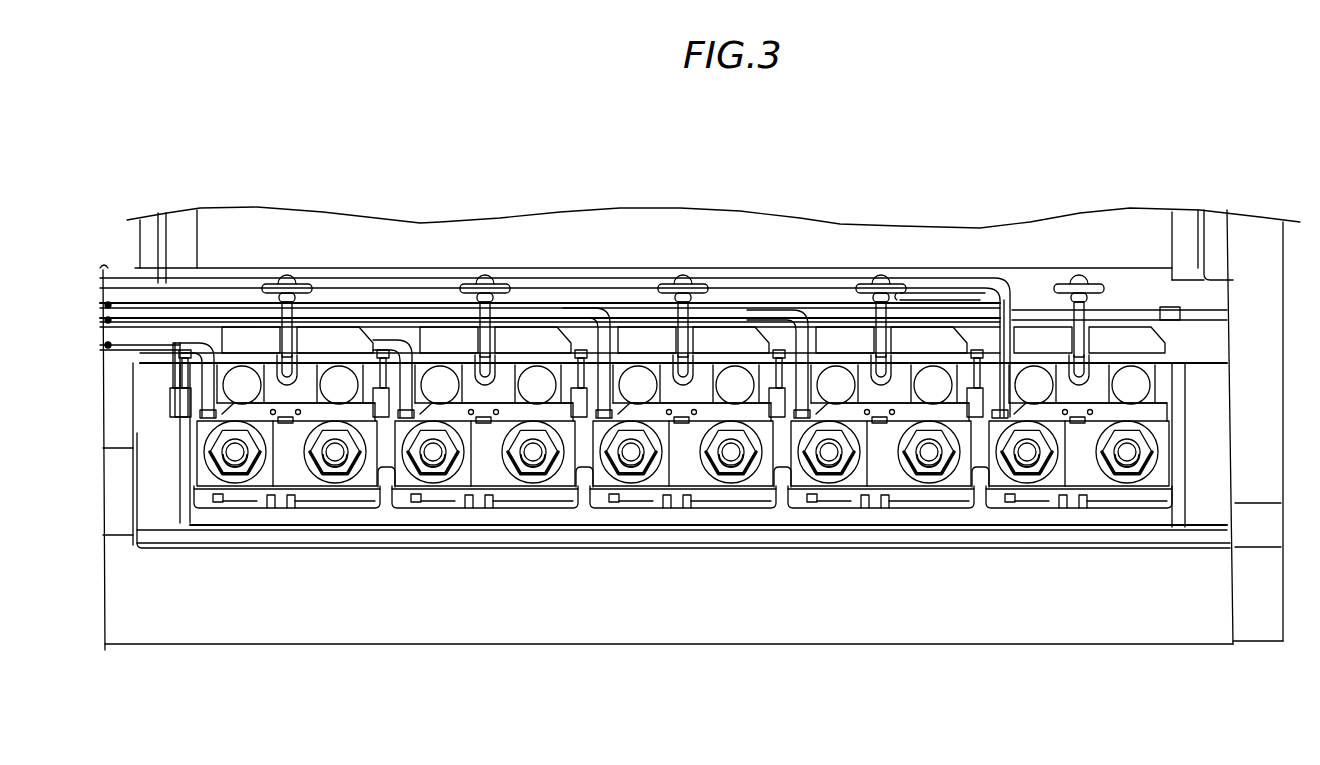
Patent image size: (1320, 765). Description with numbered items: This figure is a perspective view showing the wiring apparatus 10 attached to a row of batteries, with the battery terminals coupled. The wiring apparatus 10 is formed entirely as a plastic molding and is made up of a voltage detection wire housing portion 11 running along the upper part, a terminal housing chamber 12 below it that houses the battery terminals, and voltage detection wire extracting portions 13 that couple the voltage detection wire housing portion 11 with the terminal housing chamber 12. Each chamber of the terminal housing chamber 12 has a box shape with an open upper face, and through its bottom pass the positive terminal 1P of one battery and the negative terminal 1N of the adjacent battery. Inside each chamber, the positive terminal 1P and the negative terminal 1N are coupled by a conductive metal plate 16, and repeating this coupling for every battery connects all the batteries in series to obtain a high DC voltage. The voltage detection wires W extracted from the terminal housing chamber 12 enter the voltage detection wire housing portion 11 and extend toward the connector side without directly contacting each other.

The wiring apparatus 10 is at (1084, 188).
The voltage detection wire housing portion 11 is at (169, 287).
The terminal housing chamber 12 is at (377, 490).
The voltage detection wire extracting portion 13 is at (197, 370).
The conductive metal plate 16 is at (283, 477).
The positive terminal 1P is at (238, 455).
The negative terminal 1N is at (343, 460).
The voltage detection wire W is at (995, 310).